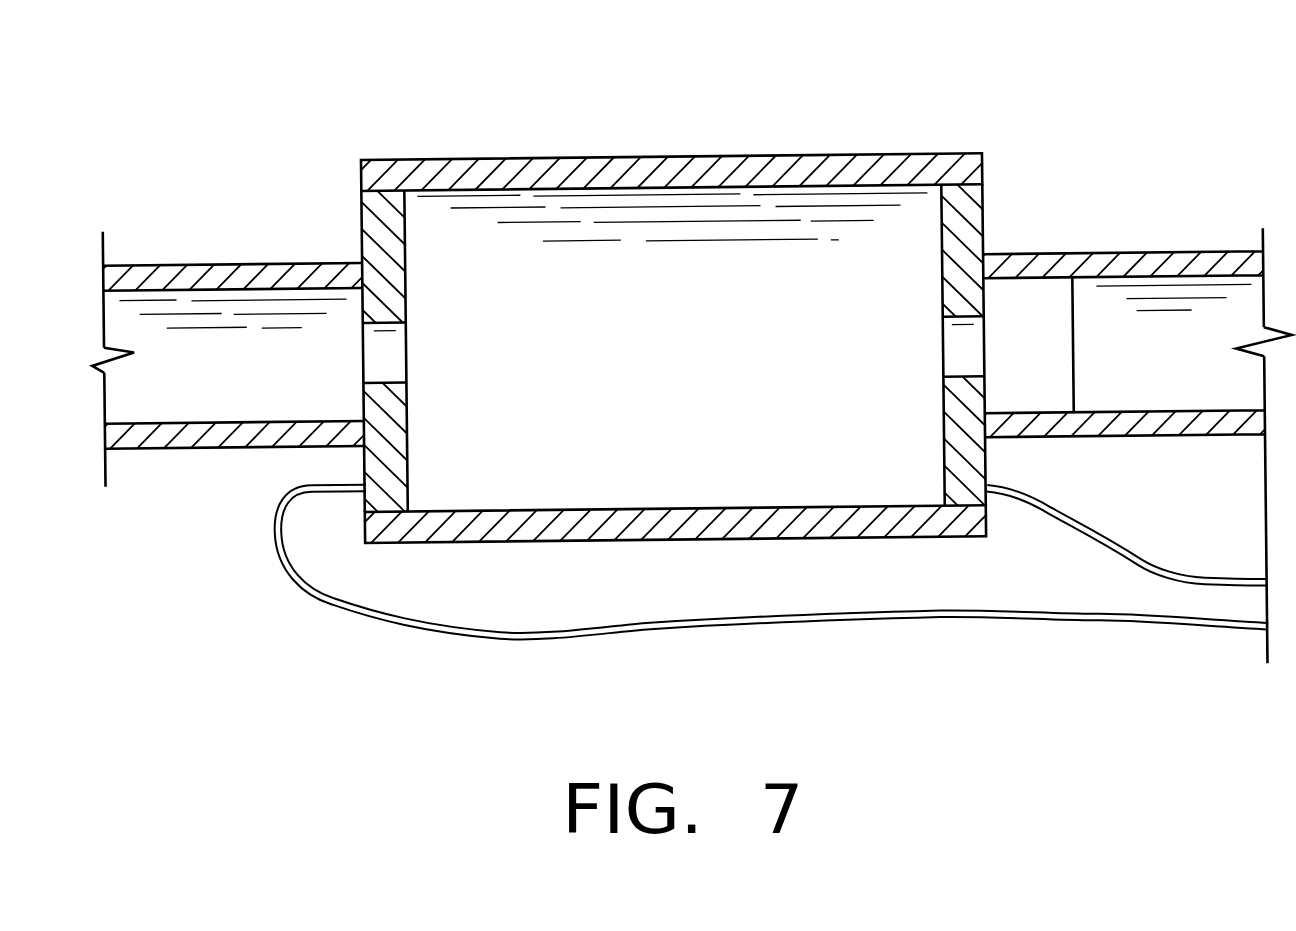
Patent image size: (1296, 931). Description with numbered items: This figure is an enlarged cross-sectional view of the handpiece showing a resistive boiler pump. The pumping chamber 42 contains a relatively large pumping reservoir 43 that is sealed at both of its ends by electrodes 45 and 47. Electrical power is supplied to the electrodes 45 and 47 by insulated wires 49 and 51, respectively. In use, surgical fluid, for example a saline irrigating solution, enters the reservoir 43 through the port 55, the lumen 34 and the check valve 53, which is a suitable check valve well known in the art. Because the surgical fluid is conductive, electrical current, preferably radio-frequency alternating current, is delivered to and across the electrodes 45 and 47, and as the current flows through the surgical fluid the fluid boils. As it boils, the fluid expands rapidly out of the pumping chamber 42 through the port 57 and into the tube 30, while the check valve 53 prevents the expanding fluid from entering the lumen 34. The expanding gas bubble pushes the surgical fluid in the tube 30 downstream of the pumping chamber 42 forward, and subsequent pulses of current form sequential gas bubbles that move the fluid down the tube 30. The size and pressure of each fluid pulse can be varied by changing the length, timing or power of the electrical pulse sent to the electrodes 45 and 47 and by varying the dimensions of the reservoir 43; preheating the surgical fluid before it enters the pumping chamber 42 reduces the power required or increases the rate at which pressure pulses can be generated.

The pumping chamber 42 is at (660, 108).
The tube 30 is at (252, 262).
The lumen 34 is at (1139, 262).
The check valve 53 is at (1024, 330).
The electrode 45 is at (404, 244).
The electrode 47 is at (940, 268).
The pumping reservoir 43 is at (697, 372).
The port 57 is at (388, 362).
The port 55 is at (951, 358).
The insulated wire 51 is at (1165, 579).
The insulated wire 49 is at (325, 603).